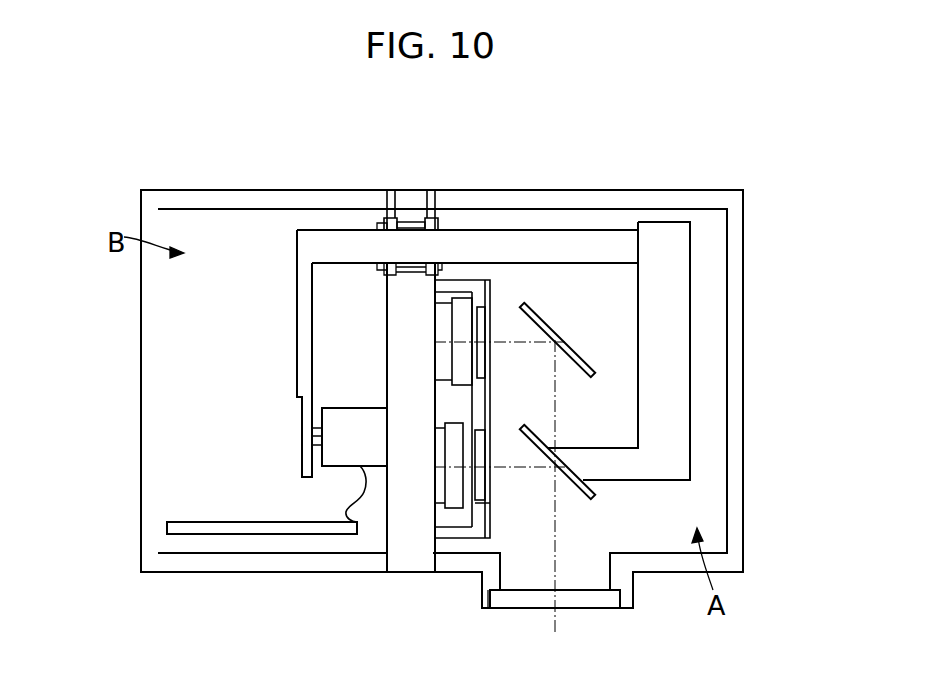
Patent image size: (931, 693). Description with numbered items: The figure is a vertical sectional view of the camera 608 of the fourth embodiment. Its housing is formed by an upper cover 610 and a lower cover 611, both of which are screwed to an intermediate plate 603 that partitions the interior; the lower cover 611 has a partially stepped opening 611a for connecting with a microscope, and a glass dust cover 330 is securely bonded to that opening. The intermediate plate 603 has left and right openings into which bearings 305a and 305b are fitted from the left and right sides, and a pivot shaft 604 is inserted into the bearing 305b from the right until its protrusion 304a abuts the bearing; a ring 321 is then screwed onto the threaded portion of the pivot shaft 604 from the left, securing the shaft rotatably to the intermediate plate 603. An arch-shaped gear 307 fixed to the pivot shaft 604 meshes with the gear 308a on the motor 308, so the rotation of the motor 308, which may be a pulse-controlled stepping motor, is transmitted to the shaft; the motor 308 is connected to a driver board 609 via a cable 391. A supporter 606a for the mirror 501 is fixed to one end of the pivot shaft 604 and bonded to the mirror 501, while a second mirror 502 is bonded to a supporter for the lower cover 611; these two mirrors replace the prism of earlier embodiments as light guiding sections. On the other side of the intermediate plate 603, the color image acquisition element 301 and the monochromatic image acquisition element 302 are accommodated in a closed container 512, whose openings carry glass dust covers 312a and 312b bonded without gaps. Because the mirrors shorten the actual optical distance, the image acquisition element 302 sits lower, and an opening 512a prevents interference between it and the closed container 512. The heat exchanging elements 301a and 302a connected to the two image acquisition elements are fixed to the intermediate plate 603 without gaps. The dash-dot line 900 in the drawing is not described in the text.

The camera 608 is at (484, 355).
The upper cover 610 is at (227, 205).
The lower cover 611 is at (735, 505).
The opening 611a is at (488, 596).
The glass dust cover 330 is at (533, 598).
The optical axis 900 is at (556, 628).
The pivot shaft 604 is at (620, 240).
The gear 307 is at (297, 284).
The supporter 606a is at (677, 434).
The intermediate plate 603 is at (402, 561).
The bearing 305a is at (393, 217).
The bearing 305b is at (430, 217).
The protrusion 304a is at (440, 228).
The ring 321 is at (380, 222).
The opening 512a is at (472, 293).
The closed container 512 is at (481, 517).
The monochromatic image acquisition element 302 is at (443, 306).
The heat exchanging element 302a is at (443, 330).
The glass dust cover 312b is at (487, 302).
The color image acquisition element 301 is at (452, 430).
The heat exchanging element 301a is at (457, 502).
The glass dust cover 312a is at (483, 437).
The mirror 502 is at (582, 378).
The mirror 501 is at (577, 494).
The motor 308 is at (334, 455).
The gear 308a is at (300, 418).
The cable 391 is at (356, 502).
The driver board 609 is at (175, 527).